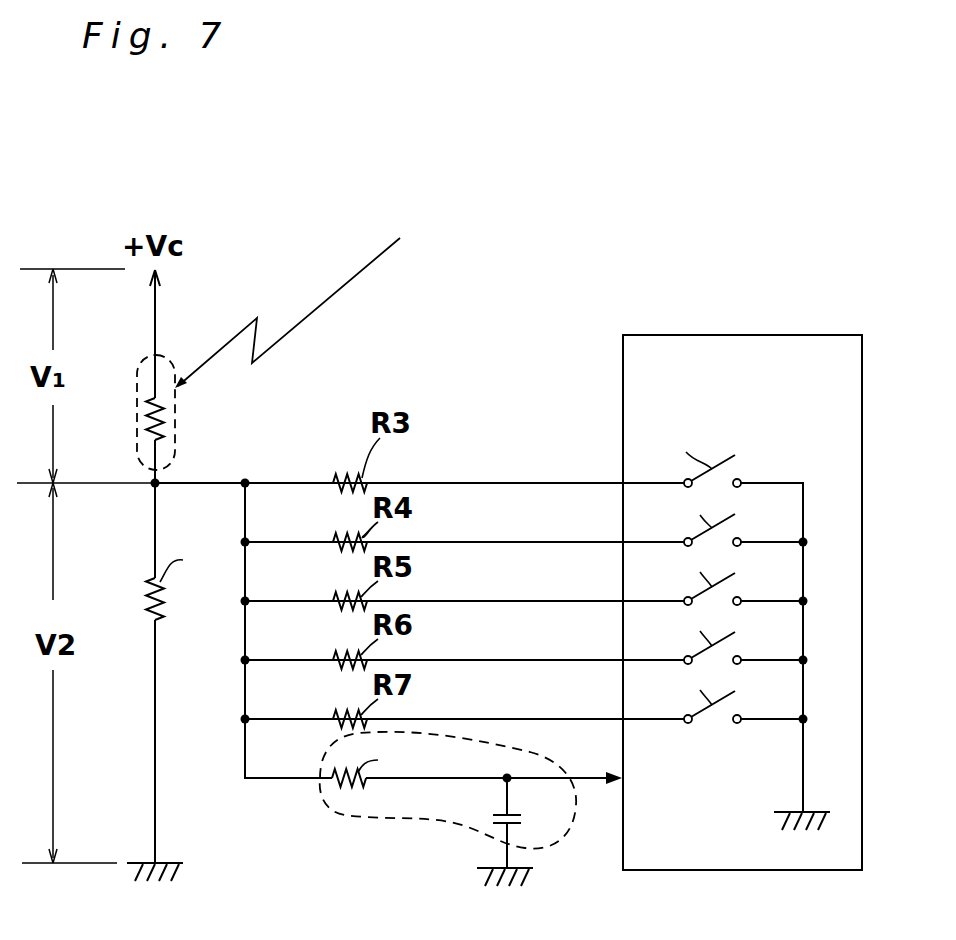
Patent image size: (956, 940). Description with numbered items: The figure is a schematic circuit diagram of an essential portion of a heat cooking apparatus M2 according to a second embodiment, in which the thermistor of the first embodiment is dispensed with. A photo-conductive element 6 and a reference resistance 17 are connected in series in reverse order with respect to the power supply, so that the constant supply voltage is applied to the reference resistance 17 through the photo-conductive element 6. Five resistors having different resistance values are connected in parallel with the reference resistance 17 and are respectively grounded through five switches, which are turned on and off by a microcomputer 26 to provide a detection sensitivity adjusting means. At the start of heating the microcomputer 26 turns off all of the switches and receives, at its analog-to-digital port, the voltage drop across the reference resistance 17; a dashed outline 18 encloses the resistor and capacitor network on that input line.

The photo-conductive element 6 is at (160, 398).
The reference resistance 17 is at (161, 612).
The filter circuit (R2, C1) 18 is at (402, 818).
The microcomputer 26 is at (742, 353).
The heat cooking apparatus M2 is at (548, 223).